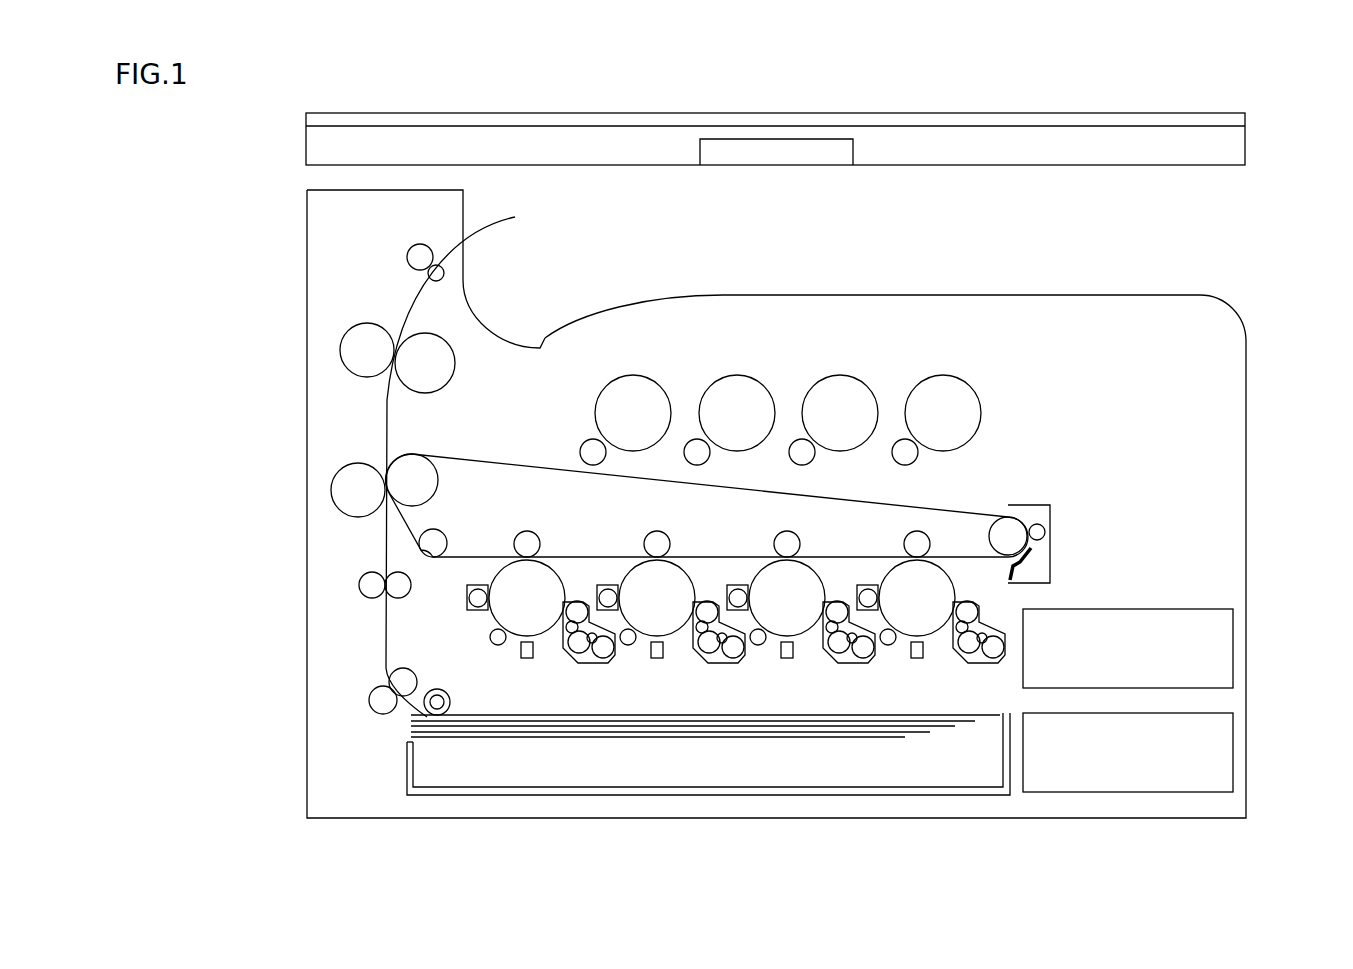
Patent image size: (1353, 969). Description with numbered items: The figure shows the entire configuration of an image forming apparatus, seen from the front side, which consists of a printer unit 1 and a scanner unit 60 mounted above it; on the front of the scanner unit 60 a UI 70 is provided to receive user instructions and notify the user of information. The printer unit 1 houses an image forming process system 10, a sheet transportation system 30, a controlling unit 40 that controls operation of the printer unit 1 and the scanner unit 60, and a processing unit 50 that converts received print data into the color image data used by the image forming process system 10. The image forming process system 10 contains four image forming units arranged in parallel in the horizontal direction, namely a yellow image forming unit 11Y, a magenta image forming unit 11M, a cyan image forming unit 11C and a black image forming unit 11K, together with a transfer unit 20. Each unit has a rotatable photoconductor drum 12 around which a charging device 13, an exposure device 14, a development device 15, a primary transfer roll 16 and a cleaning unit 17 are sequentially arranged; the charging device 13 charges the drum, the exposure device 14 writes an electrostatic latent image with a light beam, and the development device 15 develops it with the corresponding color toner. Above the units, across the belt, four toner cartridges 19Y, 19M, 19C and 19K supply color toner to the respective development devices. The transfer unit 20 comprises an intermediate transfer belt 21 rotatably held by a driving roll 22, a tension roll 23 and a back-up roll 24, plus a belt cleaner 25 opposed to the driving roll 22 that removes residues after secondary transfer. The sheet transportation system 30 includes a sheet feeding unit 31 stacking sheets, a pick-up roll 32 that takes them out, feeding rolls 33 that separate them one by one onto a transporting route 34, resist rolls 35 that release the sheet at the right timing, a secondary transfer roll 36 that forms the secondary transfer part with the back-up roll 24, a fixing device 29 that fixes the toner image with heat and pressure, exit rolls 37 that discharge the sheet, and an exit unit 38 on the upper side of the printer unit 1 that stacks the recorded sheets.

The printer unit 1 is at (1250, 291).
The image forming process system 10 is at (768, 542).
The black image forming unit 11K is at (557, 667).
The cyan image forming unit 11C is at (687, 667).
The magenta image forming unit 11M is at (818, 667).
The yellow image forming unit 11Y is at (908, 594).
The photoconductor drum 12 is at (905, 583).
The charging device 13 is at (884, 646).
The exposure device 14 is at (918, 660).
The development device 15 is at (972, 598).
The primary transfer roll 16 is at (916, 543).
The cleaning unit 17 is at (868, 585).
The black toner cartridge 19K is at (636, 400).
The cyan toner cartridge 19C is at (741, 400).
The magenta toner cartridge 19M is at (844, 400).
The yellow toner cartridge 19Y is at (947, 400).
The transfer unit 20 is at (707, 467).
The intermediate transfer belt 21 is at (597, 557).
The driving roll 22 is at (1005, 530).
The tension roll 23 is at (438, 538).
The back-up roll 24 is at (424, 483).
The belt cleaner 25 is at (1058, 531).
The fixing device 29 is at (337, 347).
The sheet transportation system 30 is at (617, 736).
The sheet feeding unit 31 is at (403, 766).
The pick-up roll 32 is at (446, 696).
The feeding rolls 33 is at (382, 700).
The transporting route 34 is at (385, 635).
The resist rolls 35 is at (372, 585).
The secondary transfer roll 36 is at (357, 490).
The exit rolls 37 is at (417, 256).
The exit unit 38 is at (725, 295).
The controlling unit 40 is at (1233, 750).
The processing unit 50 is at (1233, 647).
The scanner unit 60 is at (817, 159).
The UI 70 is at (775, 152).